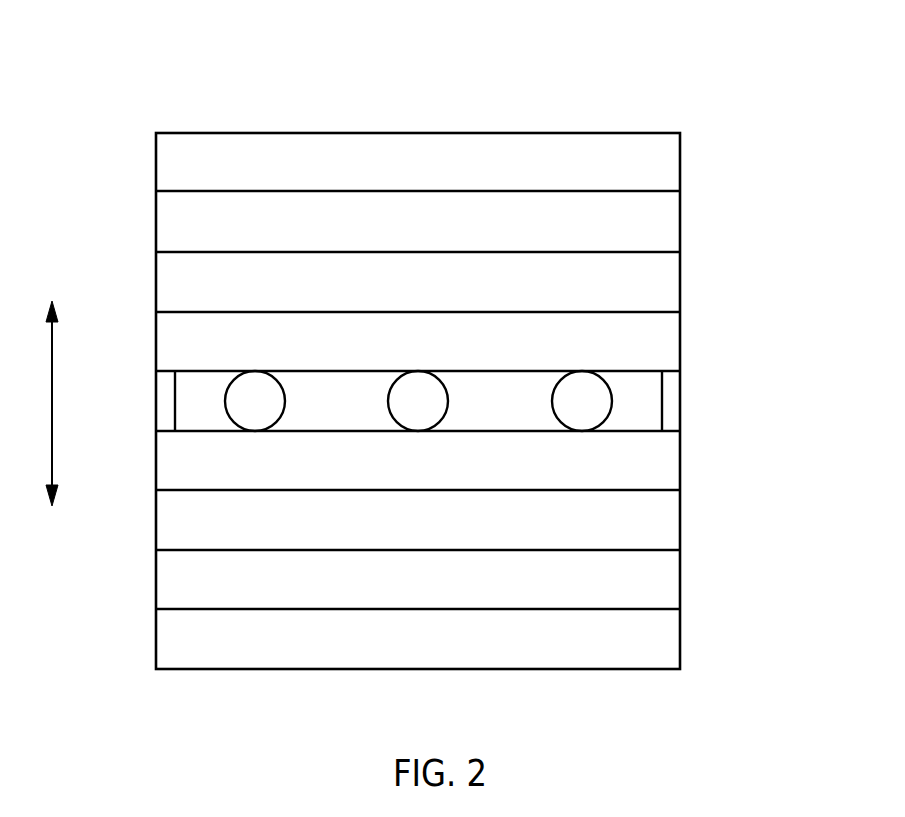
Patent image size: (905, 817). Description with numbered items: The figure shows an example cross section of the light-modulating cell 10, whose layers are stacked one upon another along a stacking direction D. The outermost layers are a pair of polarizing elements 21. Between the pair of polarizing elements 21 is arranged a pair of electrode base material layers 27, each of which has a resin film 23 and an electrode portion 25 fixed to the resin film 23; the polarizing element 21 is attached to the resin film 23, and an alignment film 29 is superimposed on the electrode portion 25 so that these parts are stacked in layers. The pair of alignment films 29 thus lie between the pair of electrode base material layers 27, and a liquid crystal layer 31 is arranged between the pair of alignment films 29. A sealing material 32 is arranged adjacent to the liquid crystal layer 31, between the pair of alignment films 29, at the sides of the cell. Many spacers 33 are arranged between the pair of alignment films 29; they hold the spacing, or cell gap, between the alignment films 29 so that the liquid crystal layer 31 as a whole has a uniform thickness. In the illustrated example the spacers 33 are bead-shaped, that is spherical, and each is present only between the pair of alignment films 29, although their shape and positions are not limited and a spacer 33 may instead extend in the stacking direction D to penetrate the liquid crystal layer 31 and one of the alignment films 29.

The light-modulating cell 10 is at (690, 98).
The polarizing element 21 is at (672, 166).
The resin film 23 is at (672, 224).
The electrode portion 25 is at (672, 286).
The electrode base material layer 27 is at (752, 198).
The alignment film 29 is at (672, 344).
The liquid crystal layer 31 is at (206, 389).
The sealing material 32 is at (166, 403).
The spacer 33 is at (258, 381).
The stacking direction D is at (40, 403).